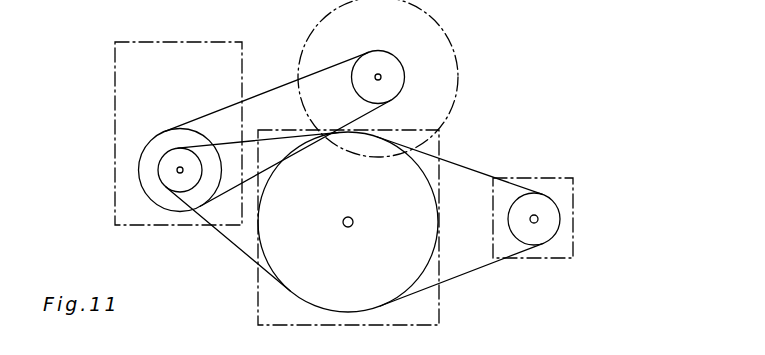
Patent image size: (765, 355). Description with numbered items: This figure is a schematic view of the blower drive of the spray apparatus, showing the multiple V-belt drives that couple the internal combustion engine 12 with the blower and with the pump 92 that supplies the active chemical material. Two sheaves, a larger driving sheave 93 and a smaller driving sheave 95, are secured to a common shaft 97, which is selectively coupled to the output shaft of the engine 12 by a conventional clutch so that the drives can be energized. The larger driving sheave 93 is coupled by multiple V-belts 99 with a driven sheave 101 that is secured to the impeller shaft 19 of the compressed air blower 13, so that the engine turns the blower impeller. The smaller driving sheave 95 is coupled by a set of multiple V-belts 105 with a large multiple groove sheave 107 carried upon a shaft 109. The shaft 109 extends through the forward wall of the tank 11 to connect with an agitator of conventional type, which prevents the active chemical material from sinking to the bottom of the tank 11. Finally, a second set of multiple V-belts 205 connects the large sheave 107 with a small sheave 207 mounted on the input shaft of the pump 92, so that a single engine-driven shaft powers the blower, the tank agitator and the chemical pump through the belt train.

The tank 11 is at (447, 151).
The internal combustion engine 12 is at (114, 97).
The compressed air blower 13 is at (434, 0).
The impeller shaft 19 is at (381, 79).
The pump 92 is at (577, 247).
The larger driving sheave 93 is at (157, 147).
The smaller driving sheave 95 is at (167, 168).
The shaft 97 is at (177, 172).
The multiple V-belts 99 is at (218, 110).
The driven sheave 101 is at (403, 63).
The multiple V-belts 105 is at (238, 250).
The large multiple groove sheave 107 is at (362, 303).
The shaft 109 is at (349, 228).
The multiple V-belts 205 is at (470, 273).
The small sheave 207 is at (553, 219).